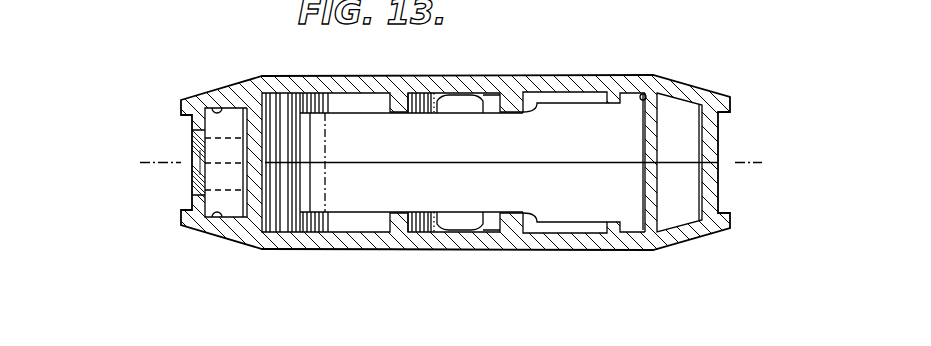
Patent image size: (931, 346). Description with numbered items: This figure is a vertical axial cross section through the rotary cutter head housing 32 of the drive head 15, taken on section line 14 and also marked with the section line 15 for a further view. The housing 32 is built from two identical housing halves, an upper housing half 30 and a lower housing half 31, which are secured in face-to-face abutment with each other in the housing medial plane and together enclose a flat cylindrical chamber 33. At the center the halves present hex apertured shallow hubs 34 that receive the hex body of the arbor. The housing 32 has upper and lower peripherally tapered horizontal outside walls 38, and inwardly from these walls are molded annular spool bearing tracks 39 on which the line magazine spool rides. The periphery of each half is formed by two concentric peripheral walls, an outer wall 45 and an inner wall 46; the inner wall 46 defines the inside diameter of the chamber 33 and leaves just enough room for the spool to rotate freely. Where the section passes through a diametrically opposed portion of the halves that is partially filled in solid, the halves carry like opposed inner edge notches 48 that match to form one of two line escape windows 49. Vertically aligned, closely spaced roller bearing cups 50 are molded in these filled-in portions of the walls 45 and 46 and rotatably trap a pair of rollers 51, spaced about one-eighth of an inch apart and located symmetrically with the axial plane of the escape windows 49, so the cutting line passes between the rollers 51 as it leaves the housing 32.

The section line 14- 14 is at (132, 165).
The drive head 15 is at (137, 98).
The upper housing half 30 is at (606, 80).
The lower housing half 31 is at (600, 251).
The rotary cutter head housing 32 is at (752, 100).
The flat cylindrical chamber 33 is at (644, 94).
The hex apertured shallow hubs 34 is at (508, 105).
The peripherally tapered horizontal outside walls 38 is at (550, 90).
The annular spool bearing tracks 39 is at (612, 103).
The outer peripheral wall 45 is at (715, 138).
The inner peripheral wall 46 is at (648, 140).
The inner edge notches 48 is at (192, 142).
The line escape windows 49 is at (188, 173).
The roller bearing cups 50 is at (218, 104).
The rollers 51 is at (232, 120).